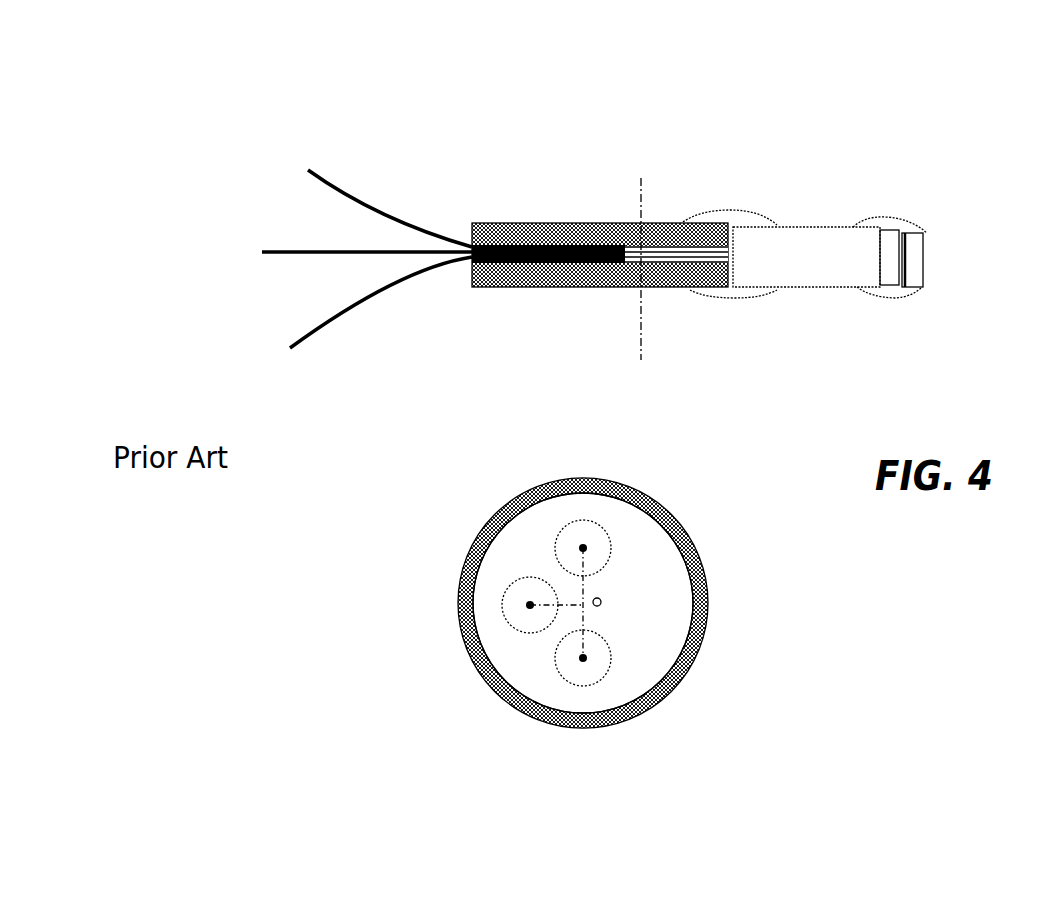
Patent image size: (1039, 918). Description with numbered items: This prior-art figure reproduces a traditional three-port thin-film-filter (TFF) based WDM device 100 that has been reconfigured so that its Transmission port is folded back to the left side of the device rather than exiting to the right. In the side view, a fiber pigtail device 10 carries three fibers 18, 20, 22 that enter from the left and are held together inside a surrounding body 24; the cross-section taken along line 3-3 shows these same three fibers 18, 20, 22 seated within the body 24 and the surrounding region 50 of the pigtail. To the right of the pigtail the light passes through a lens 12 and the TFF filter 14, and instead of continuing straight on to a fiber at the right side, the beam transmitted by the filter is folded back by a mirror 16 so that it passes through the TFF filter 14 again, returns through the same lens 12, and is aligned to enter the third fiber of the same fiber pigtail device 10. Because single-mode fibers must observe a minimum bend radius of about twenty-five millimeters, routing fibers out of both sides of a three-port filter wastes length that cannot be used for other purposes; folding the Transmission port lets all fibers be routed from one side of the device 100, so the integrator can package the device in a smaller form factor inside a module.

The cable assembly 100 is at (775, 61).
The cable 10 is at (628, 214).
The section line 3- 3 is at (660, 360).
The connector body 12 is at (858, 250).
The ferrule 14 is at (890, 247).
The connector tip 16 is at (910, 252).
The first conductor 18 is at (327, 176).
The second conductor 20 is at (312, 335).
The third conductor 22 is at (287, 250).
The outer jacket 24 is at (583, 277).
The insulation filler 50 is at (920, 288).